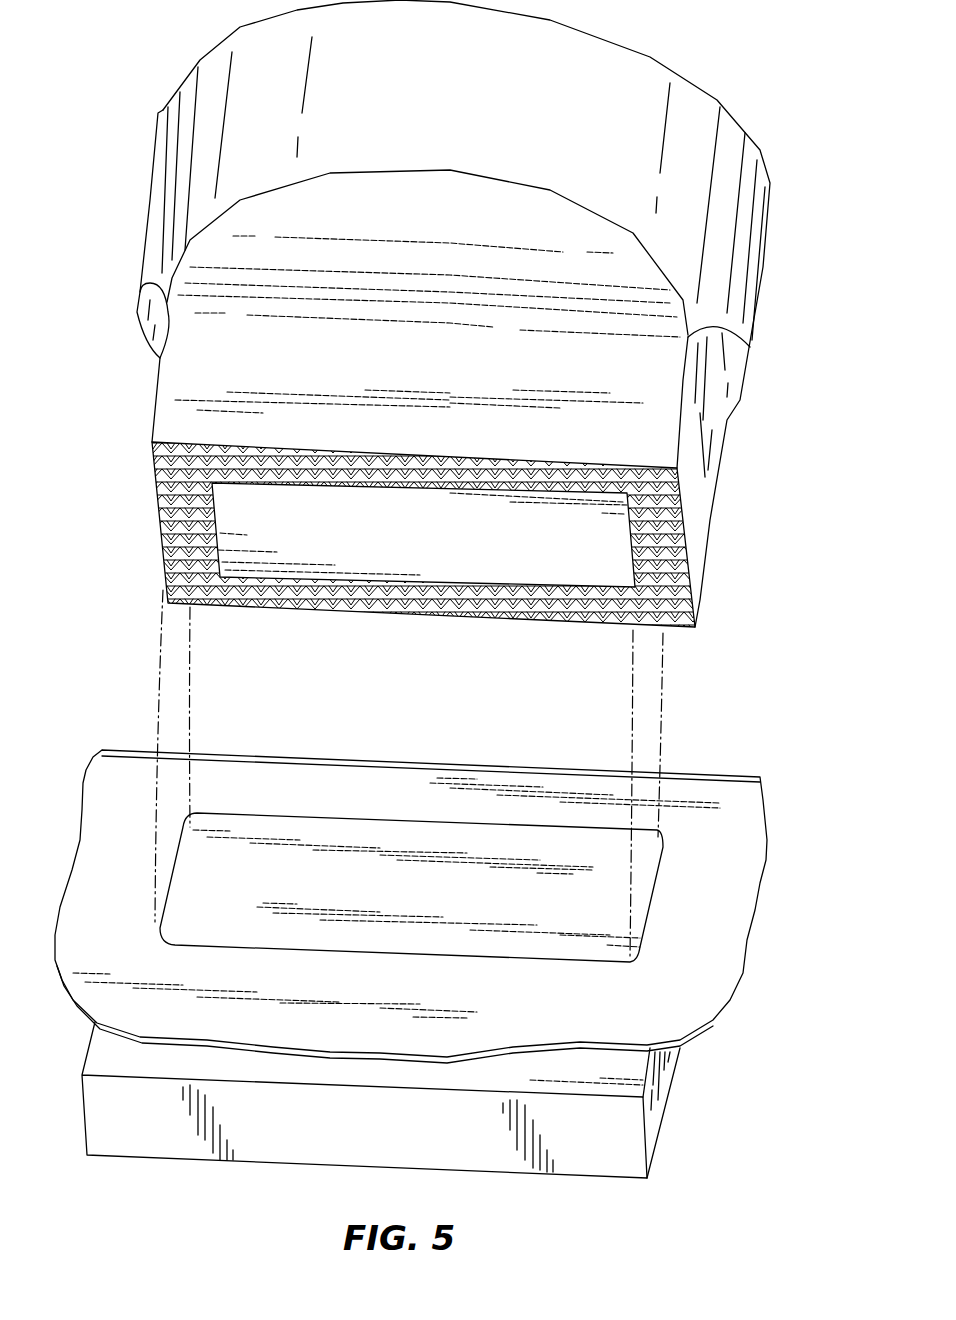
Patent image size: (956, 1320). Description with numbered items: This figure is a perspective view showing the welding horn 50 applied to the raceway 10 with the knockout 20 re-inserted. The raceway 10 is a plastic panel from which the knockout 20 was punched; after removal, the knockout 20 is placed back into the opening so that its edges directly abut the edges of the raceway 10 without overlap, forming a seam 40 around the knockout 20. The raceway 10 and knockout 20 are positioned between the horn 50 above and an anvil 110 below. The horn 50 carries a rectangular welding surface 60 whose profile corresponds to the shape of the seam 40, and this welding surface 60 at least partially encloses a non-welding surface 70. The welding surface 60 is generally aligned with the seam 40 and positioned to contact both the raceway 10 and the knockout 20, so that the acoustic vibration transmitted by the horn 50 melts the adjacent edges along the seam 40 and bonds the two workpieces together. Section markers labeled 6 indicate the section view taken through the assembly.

The raceway 10 is at (720, 910).
The knockout 20 is at (507, 900).
The seam 40 is at (353, 813).
The welding horn 50 is at (108, 132).
The welding surface 60 is at (138, 552).
The non-welding surface 70 is at (607, 543).
The anvil 110 is at (163, 1058).
The section line 6 is at (148, 868).